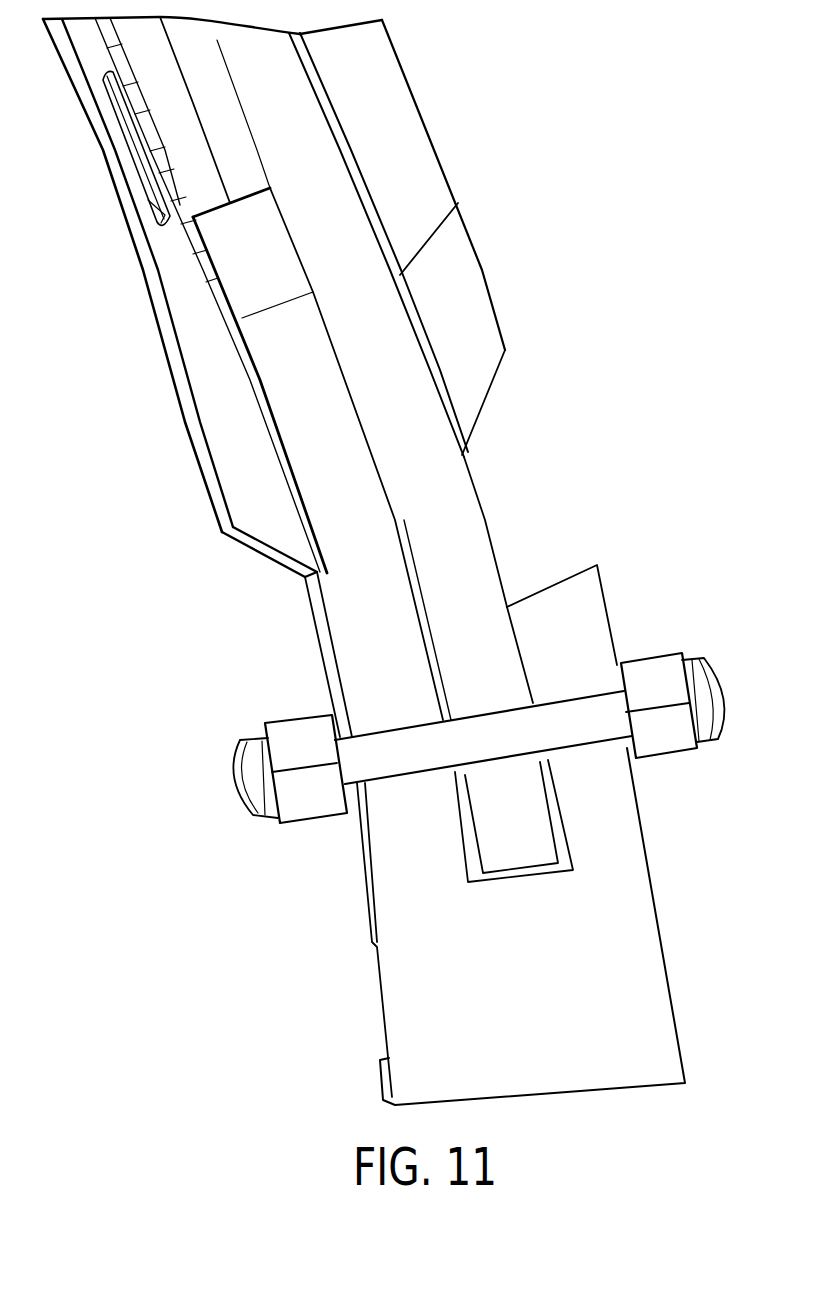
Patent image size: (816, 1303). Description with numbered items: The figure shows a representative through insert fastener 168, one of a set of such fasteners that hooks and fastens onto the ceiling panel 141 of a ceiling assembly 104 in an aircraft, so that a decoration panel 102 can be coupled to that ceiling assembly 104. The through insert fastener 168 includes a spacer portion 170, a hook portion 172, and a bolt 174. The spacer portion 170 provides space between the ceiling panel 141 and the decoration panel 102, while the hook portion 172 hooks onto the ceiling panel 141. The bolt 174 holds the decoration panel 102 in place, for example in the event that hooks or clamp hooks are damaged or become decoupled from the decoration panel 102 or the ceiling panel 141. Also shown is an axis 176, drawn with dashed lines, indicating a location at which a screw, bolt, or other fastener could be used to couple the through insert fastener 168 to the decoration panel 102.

The decoration panel 102 is at (240, 433).
The ceiling assembly 104 is at (418, 180).
The ceiling panel 141 is at (415, 357).
The through insert fastener 168 is at (160, 648).
The spacer portion 170 is at (273, 377).
The hook portion 172 is at (412, 990).
The bolt 174 is at (405, 755).
The axis 176 is at (270, 258).